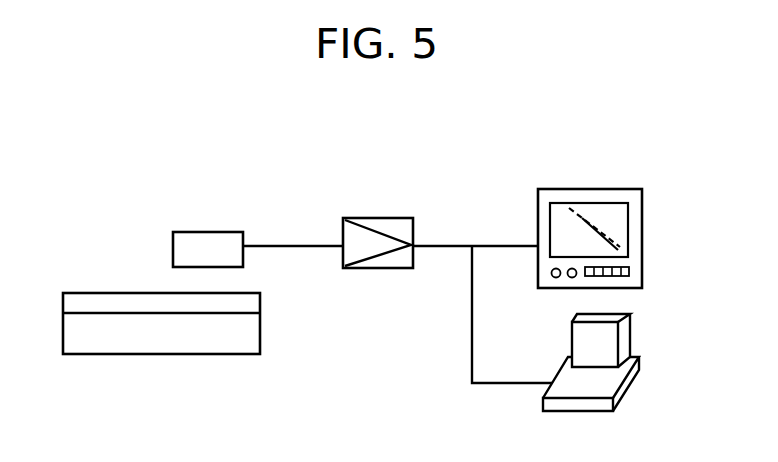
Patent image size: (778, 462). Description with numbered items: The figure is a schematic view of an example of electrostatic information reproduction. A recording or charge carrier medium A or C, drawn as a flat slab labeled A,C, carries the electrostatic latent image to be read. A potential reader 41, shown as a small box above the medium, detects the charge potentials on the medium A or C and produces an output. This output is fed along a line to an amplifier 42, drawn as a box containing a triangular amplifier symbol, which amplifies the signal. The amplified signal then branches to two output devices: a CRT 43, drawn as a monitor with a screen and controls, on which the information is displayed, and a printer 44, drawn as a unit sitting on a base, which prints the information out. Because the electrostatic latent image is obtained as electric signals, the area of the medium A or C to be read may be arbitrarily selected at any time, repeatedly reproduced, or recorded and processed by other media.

The potential reader 41 is at (210, 232).
The amplifier 42 is at (393, 218).
The CRT 43 is at (643, 209).
The printer 44 is at (623, 333).
The recording or charge carrier medium A is at (161, 368).
The recording or charge carrier medium C is at (147, 354).
The recording or charge carrier medium A,C is at (161, 368).